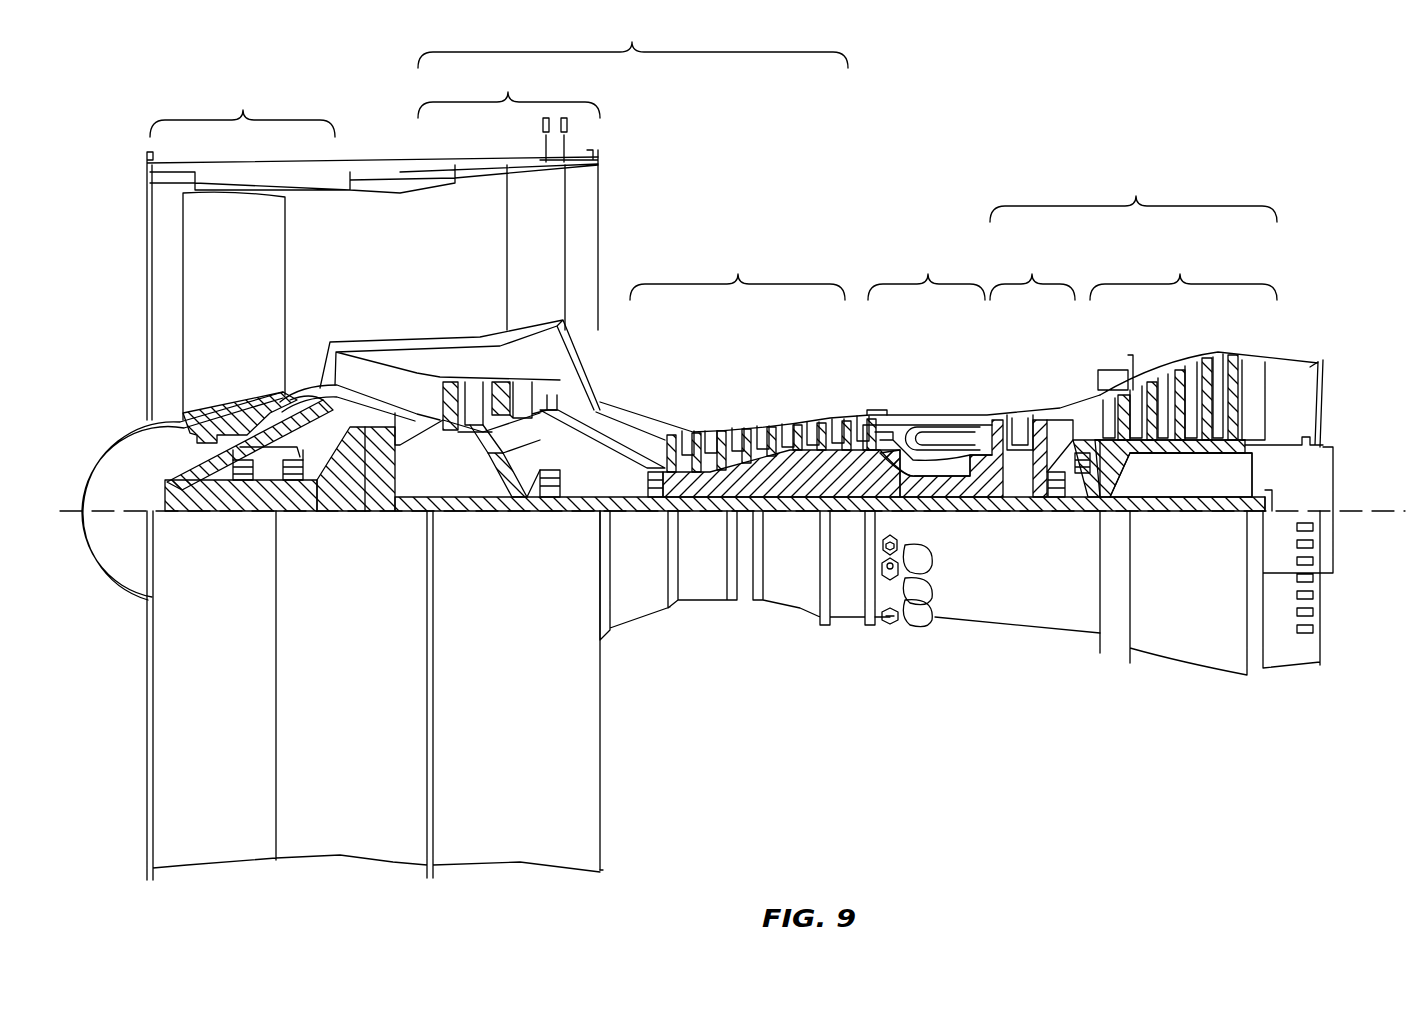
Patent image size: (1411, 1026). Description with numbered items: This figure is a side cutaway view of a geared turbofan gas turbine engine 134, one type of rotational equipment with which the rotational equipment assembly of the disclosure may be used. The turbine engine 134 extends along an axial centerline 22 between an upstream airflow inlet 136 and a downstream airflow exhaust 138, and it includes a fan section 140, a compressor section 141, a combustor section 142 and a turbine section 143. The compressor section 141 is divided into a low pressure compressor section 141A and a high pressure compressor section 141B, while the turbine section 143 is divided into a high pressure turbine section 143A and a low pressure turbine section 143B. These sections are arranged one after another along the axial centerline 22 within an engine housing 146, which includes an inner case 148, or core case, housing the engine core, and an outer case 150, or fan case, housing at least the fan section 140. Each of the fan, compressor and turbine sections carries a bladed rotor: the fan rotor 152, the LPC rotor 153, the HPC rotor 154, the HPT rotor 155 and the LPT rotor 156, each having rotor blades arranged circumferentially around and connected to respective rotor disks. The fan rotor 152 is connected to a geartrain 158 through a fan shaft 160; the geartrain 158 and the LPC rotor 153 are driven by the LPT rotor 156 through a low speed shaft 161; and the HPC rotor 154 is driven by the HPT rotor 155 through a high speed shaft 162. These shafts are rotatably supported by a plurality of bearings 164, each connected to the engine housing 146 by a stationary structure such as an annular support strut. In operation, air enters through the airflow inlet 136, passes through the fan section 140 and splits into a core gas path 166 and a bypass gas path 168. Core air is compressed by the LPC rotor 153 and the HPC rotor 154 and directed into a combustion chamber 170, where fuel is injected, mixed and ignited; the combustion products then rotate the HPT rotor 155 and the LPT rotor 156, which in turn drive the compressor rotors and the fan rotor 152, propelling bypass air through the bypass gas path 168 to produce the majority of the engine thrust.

The axial centerline 22 is at (1390, 530).
The turbine engine 134 is at (114, 140).
The airflow inlet 136 is at (150, 245).
The airflow exhaust 138 is at (1322, 395).
The fan section 140 is at (242, 106).
The compressor section 141 is at (633, 38).
The low pressure compressor (LPC) section 141A is at (440, 253).
The high pressure compressor (HPC) section 141B is at (848, 357).
The combustor section 142 is at (926, 330).
The turbine section 143 is at (1133, 192).
The high pressure turbine (HPT) section 143A is at (1032, 347).
The low pressure turbine (LPT) section 143B is at (1206, 371).
The engine housing 146 is at (630, 645).
The inner case 148 is at (846, 617).
The outer case 150 is at (548, 876).
The fan rotor 152 is at (178, 432).
The LPC rotor 153 is at (497, 470).
The HPC rotor 154 is at (785, 470).
The HPT rotor 155 is at (1017, 487).
The LPT rotor 156 is at (1180, 450).
The geartrain 158 is at (382, 512).
The fan shaft 160 is at (222, 512).
The low speed shaft 161 is at (1190, 512).
The high speed shaft 162 is at (945, 497).
The bearings 164 is at (242, 480).
The core gas path 166 is at (626, 428).
The bypass gas path 168 is at (430, 270).
The combustion chamber 170 is at (940, 438).